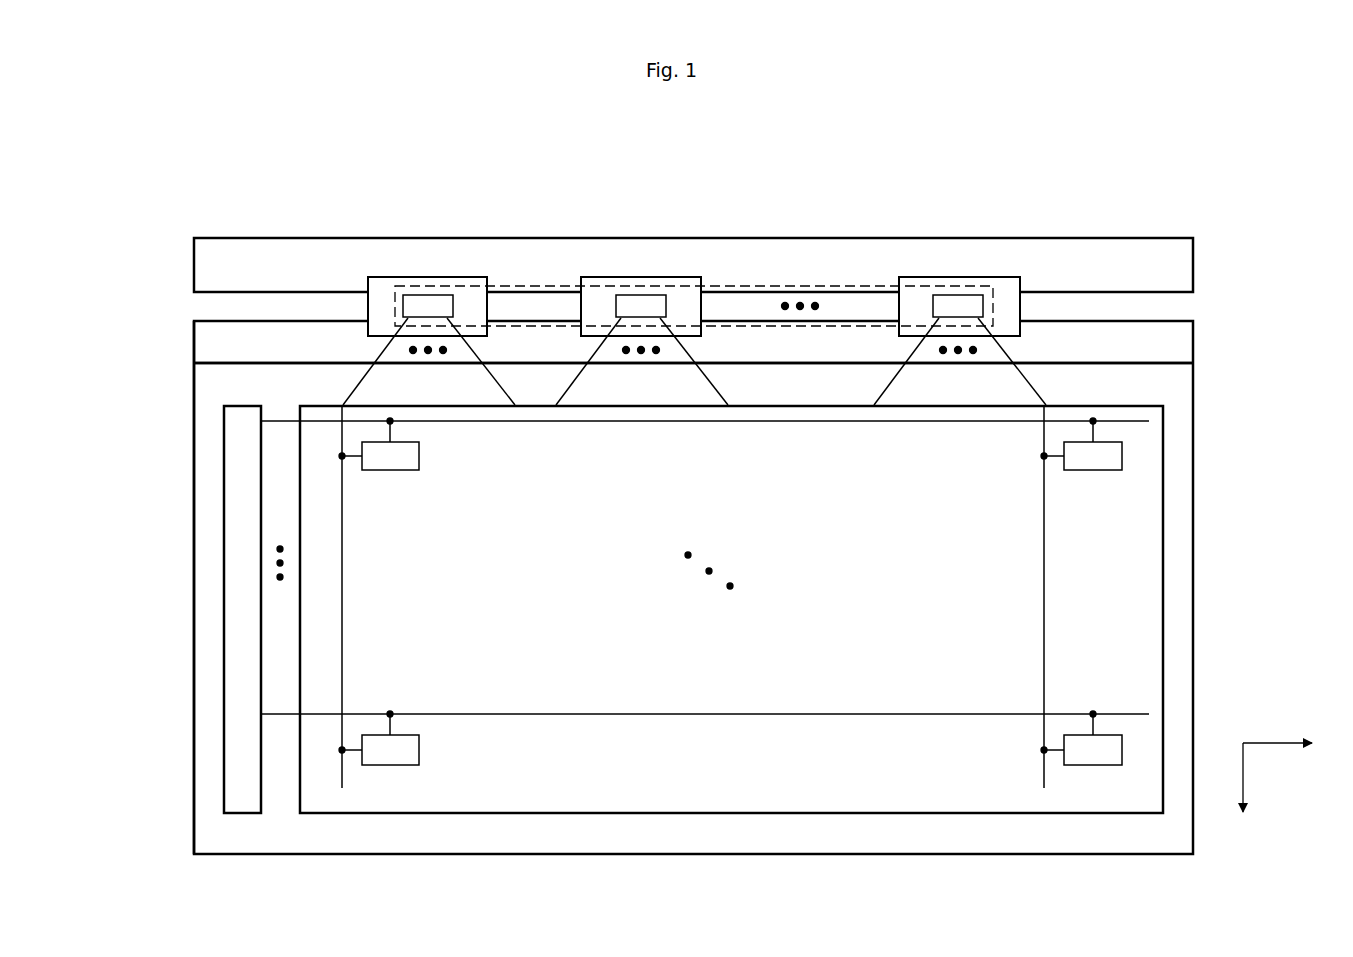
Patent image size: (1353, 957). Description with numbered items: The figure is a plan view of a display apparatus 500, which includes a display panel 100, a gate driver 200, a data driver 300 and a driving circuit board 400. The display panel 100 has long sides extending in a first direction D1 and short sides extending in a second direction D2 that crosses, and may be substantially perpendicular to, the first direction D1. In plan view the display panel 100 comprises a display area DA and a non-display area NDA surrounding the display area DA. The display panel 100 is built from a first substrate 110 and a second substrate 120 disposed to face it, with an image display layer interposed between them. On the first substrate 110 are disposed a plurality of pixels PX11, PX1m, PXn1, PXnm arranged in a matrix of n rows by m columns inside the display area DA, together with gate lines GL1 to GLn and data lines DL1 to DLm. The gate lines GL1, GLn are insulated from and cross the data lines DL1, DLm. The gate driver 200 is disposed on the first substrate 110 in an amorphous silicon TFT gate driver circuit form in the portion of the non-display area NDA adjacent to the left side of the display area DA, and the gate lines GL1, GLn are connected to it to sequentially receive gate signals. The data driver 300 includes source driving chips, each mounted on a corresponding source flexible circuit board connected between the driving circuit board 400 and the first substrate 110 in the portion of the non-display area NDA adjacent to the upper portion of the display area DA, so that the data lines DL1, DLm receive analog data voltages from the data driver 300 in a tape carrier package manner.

The display apparatus 500 is at (1128, 181).
The driving circuit board 400 is at (1180, 265).
The display panel 100 is at (1265, 330).
The first substrate 110 is at (1180, 340).
The second substrate 120 is at (1180, 378).
The non-display area NDA is at (216, 486).
The display area DA is at (1163, 583).
The gate driver 200 is at (224, 583).
The data driver 300 is at (788, 285).
The gate line GL1 is at (552, 423).
The gate line GLn is at (563, 712).
The data line DL1 is at (344, 583).
The data line DLm is at (1042, 583).
The pixel PX11 is at (379, 444).
The pixel PX1m is at (1081, 444).
The pixel PXn1 is at (379, 738).
The pixel PXnm is at (1081, 738).
The first direction D1 is at (1294, 743).
The second direction D2 is at (1244, 793).